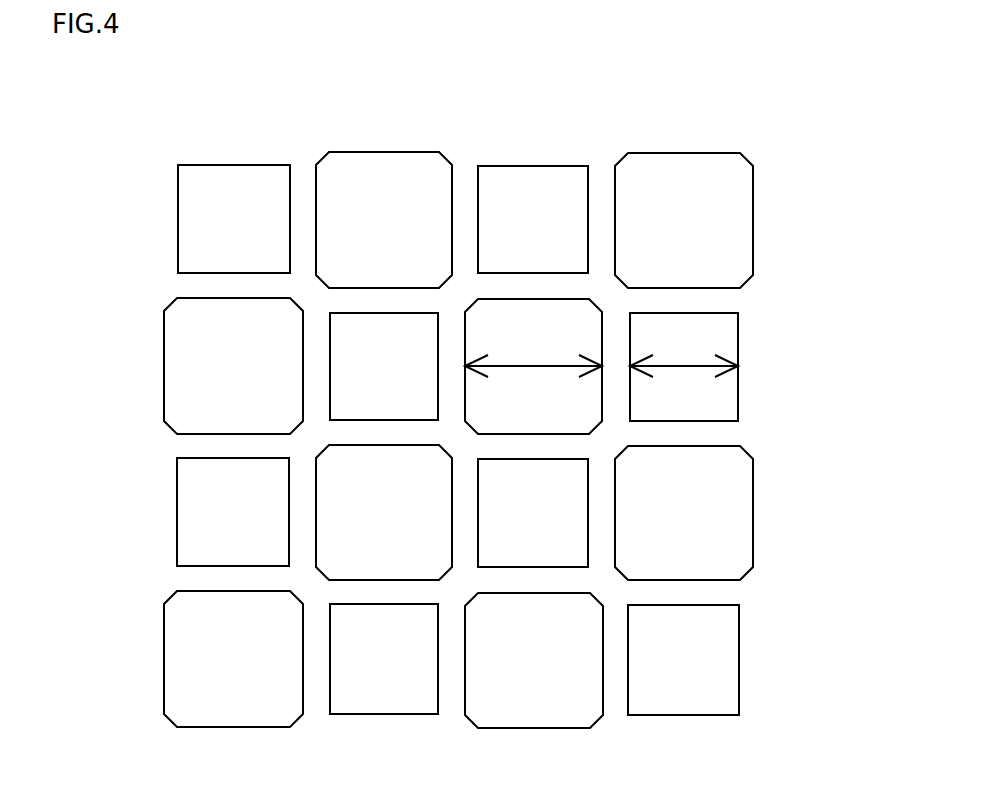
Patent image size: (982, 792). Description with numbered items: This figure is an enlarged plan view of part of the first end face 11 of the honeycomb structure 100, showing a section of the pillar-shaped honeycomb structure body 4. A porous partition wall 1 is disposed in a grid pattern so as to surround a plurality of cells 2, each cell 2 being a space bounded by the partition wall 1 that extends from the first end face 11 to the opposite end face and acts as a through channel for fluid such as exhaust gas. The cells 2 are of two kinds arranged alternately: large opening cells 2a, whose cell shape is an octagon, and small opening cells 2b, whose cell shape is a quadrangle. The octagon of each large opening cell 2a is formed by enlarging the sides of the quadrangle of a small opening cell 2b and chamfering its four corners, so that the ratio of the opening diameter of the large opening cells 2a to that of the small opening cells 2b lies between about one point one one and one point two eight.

The honeycomb structure 100 is at (767, 78).
The partition wall 1 is at (463, 295).
The first end face 11 is at (233, 145).
The honeycomb structure body 4 is at (778, 155).
The cells 2 is at (672, 303).
The large opening cells 2a is at (560, 327).
The small opening cells 2b is at (703, 342).